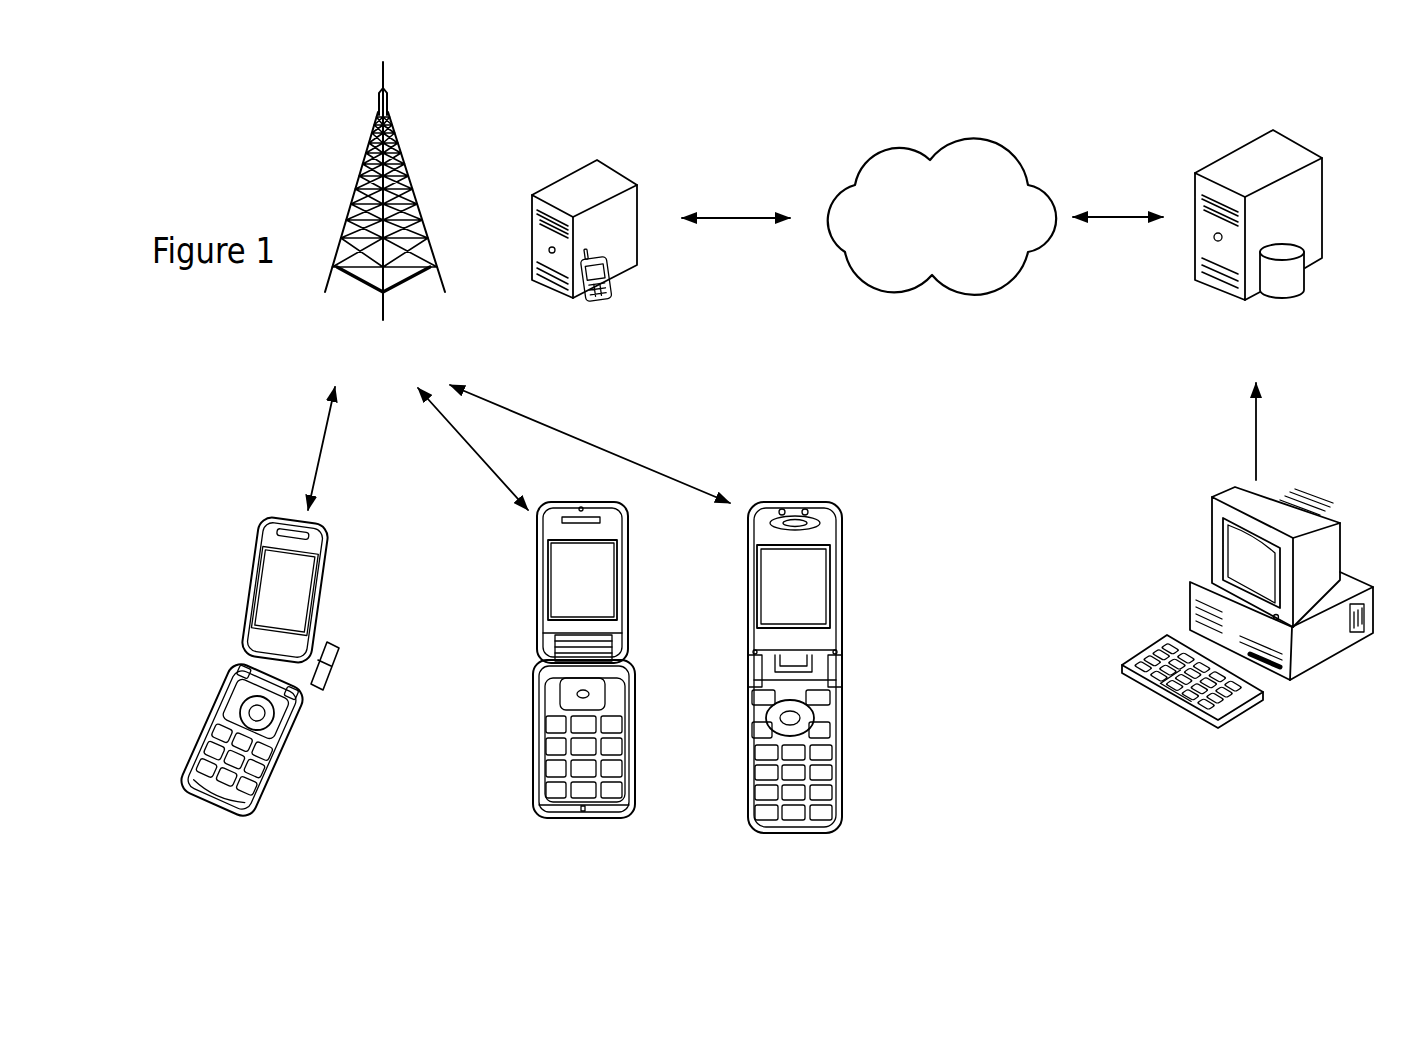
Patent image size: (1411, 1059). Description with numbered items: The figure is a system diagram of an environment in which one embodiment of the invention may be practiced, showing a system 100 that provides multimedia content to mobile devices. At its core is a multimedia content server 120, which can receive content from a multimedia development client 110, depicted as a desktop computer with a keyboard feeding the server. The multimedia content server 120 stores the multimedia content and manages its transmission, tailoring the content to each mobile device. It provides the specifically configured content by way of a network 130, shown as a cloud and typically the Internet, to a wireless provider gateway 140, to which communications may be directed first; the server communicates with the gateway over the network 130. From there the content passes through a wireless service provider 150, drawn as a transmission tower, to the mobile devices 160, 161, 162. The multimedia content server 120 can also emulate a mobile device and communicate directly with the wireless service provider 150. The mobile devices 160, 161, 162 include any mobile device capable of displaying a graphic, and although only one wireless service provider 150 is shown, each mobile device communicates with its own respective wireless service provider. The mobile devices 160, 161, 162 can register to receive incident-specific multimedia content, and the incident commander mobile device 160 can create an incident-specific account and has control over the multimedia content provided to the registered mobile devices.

The multimedia distribution system 100 is at (290, 102).
The multimedia development client 110 is at (1330, 497).
The multimedia content server 120 is at (1325, 128).
The network 130 is at (997, 133).
The wireless provider gateway 140 is at (640, 137).
The wireless service provider 150 is at (417, 137).
The incident commander mobile device 160 is at (373, 660).
The mobile device 161 is at (648, 660).
The mobile device 162 is at (858, 658).